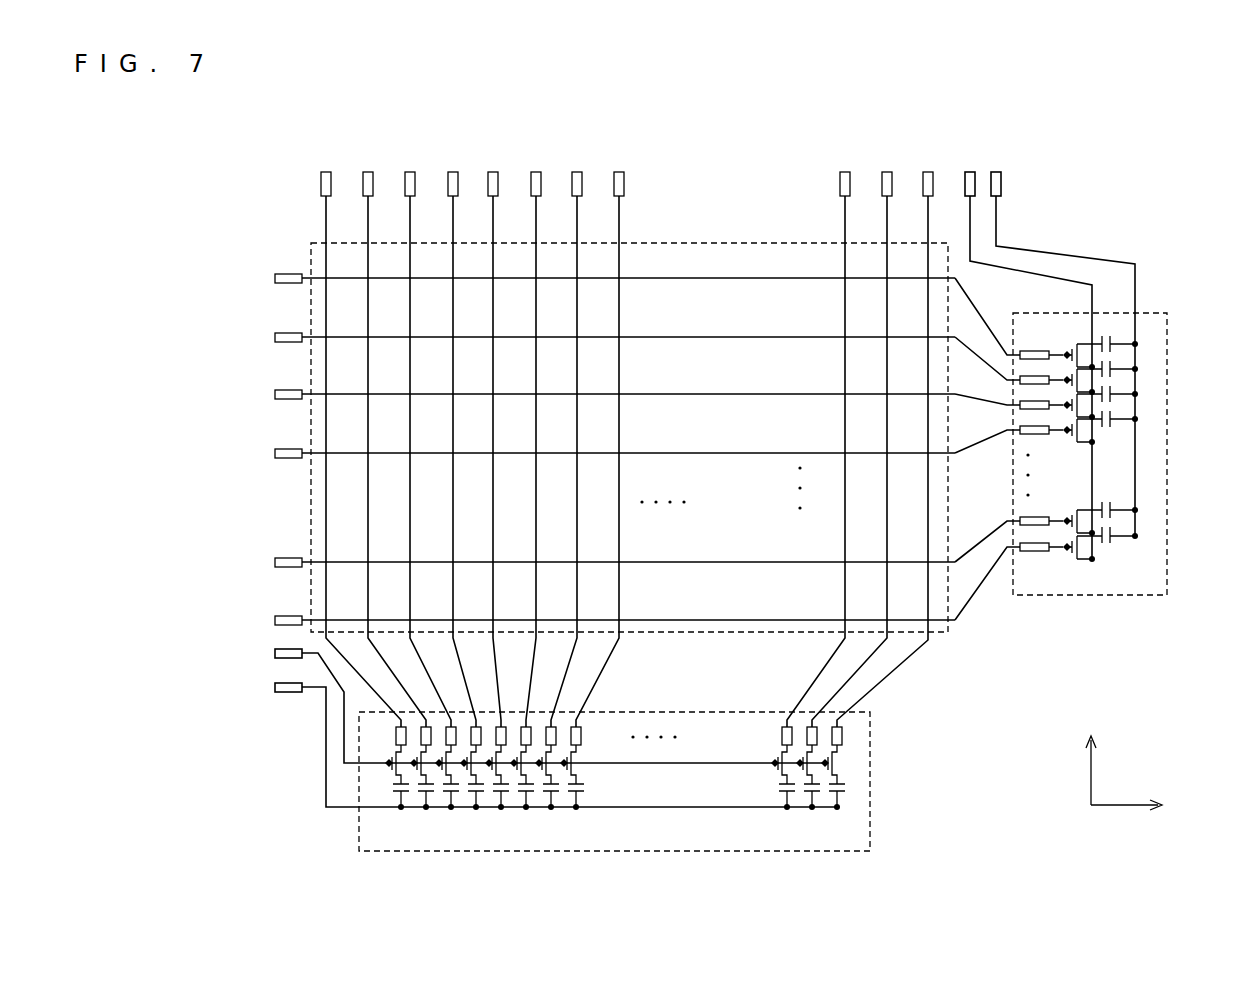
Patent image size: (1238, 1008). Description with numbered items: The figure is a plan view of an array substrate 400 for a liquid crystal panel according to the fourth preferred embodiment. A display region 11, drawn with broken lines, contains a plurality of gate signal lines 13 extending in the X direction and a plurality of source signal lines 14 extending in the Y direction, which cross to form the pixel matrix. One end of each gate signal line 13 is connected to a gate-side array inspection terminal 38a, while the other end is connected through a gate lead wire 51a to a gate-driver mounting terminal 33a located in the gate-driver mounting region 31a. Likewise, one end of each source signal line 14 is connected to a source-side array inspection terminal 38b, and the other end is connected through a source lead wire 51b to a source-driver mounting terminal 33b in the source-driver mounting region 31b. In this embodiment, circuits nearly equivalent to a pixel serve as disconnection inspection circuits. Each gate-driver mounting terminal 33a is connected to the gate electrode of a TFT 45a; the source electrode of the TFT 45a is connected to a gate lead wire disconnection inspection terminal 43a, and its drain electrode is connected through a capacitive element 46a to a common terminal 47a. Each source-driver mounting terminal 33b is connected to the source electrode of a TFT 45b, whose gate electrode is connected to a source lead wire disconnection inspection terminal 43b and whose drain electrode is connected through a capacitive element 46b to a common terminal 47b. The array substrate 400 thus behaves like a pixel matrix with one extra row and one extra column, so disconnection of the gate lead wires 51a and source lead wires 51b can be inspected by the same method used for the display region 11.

The array substrate 400 is at (233, 138).
The display region 11 is at (716, 243).
The gate signal line 13 is at (827, 455).
The source signal line 14 is at (625, 472).
The gate-side array inspection terminal 38a is at (275, 453).
The source-side array inspection terminal 38b is at (619, 172).
The gate lead wire disconnection inspection terminal 43a is at (970, 172).
The common terminal for gate lead wire disconnection inspection 47a is at (996, 172).
The source lead wire disconnection inspection terminal 43b is at (275, 653).
The common terminal for source lead wire disconnection inspection 47b is at (275, 687).
The gate lead wire 51a is at (970, 545).
The source lead wire 51b is at (822, 662).
The gate-driver mounting region 31a is at (1167, 418).
The source-driver mounting region 31b is at (588, 852).
The gate-driver mounting terminal 33a is at (1027, 351).
The source-driver mounting terminal 33b is at (782, 730).
The TFT 45a is at (1072, 515).
The TFT 45b is at (582, 757).
The capacitive element 46a is at (1103, 510).
The capacitive element 46b is at (775, 790).